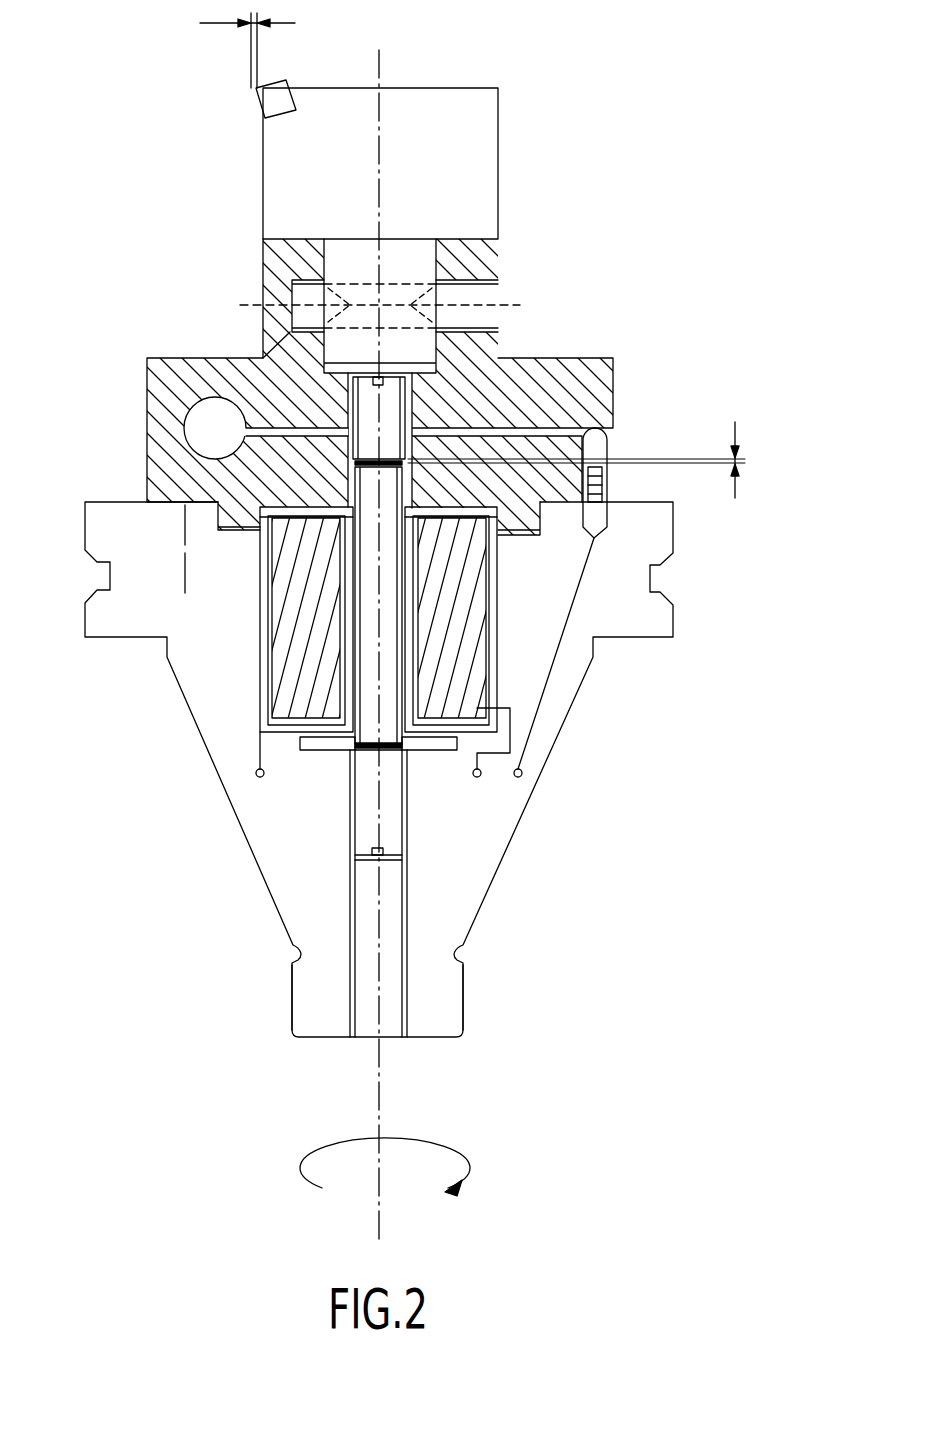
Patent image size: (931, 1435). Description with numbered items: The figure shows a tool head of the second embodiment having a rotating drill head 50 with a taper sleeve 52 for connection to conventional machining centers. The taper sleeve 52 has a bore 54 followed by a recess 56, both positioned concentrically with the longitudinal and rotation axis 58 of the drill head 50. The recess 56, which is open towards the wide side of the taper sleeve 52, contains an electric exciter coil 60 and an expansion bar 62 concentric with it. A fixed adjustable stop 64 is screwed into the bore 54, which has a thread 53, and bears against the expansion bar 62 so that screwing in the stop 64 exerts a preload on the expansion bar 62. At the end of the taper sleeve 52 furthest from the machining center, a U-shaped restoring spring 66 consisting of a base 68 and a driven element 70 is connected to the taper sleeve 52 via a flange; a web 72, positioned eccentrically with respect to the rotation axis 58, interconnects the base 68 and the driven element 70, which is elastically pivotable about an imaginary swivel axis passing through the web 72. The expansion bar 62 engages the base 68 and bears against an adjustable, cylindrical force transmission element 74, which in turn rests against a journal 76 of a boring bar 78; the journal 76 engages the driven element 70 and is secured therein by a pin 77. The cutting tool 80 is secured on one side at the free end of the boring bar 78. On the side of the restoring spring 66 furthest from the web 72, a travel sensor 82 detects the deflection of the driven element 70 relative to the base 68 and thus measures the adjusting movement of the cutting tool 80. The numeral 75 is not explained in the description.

The drill head 50 is at (171, 1027).
The taper sleeve 52 is at (482, 848).
The thread 53 is at (410, 913).
The bore 54 is at (357, 922).
The recess 56 is at (497, 598).
The rotation axis 58 is at (377, 1103).
The electric exciter coil 60 is at (472, 632).
The expansion bar 62 is at (370, 687).
The fixed adjustable stop 64 is at (363, 805).
The U-shaped restoring spring 66 is at (138, 364).
The base 68 is at (608, 488).
The driven element 70 is at (602, 371).
The web 72 is at (163, 425).
The force transmission element 74 is at (337, 403).
The left pocket 75 is at (303, 293).
The journal 76 is at (345, 258).
The pin 77 is at (485, 300).
The boring bar 78 is at (470, 148).
The cutting tool 80 is at (262, 92).
The travel sensor 82 is at (598, 433).